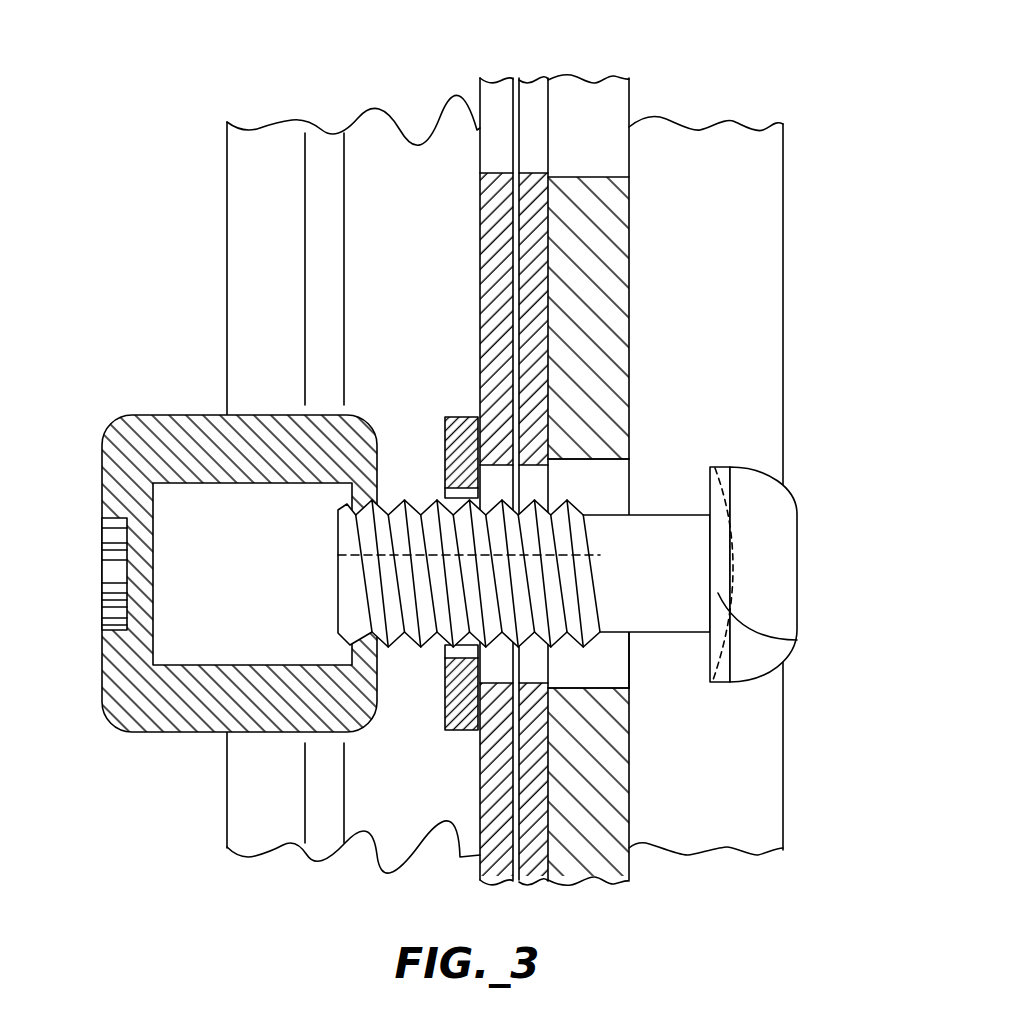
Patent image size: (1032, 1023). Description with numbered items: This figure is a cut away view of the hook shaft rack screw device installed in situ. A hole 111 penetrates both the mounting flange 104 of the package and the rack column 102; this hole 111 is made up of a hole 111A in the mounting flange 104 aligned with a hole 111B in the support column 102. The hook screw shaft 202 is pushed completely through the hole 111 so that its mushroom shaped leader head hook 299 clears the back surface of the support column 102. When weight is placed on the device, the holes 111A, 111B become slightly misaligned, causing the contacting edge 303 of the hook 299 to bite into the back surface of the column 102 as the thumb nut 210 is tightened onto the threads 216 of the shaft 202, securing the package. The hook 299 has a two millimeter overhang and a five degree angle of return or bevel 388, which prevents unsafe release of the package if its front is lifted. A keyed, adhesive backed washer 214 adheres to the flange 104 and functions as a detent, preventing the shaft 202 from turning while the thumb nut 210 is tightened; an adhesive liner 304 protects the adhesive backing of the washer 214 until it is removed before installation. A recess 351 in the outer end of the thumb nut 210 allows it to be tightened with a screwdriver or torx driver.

The rack column 102 is at (607, 245).
The mounting flange 104 is at (492, 228).
The hole 111 is at (550, 508).
The hole in mounting flange 111A is at (620, 670).
The hole in support column 111B is at (597, 745).
The hook screw shaft 202 is at (608, 543).
The thumb nut 210 is at (202, 573).
The keyed, adhesive backed washer 214 is at (423, 414).
The threads 216 is at (417, 653).
The hook or mushroom shaped leader head hook 299 is at (780, 542).
The contacting edge 303 is at (707, 466).
The adhesive liner 304 is at (477, 405).
The recess 351 is at (105, 568).
The angle of return (bevel) 388 is at (797, 640).